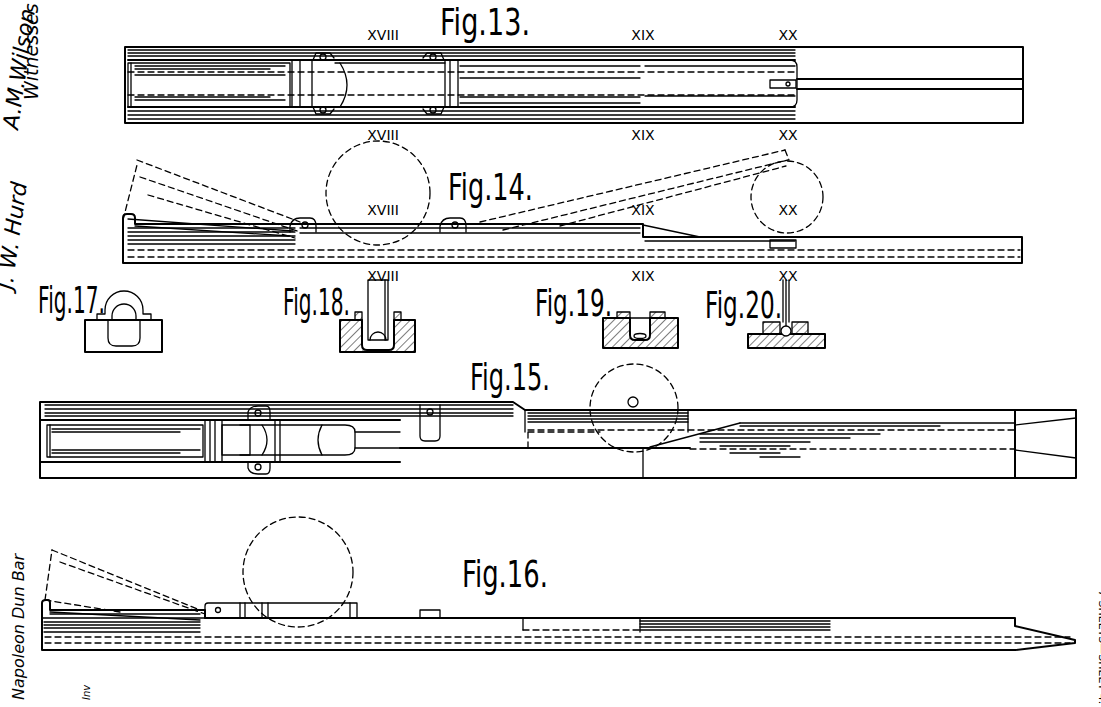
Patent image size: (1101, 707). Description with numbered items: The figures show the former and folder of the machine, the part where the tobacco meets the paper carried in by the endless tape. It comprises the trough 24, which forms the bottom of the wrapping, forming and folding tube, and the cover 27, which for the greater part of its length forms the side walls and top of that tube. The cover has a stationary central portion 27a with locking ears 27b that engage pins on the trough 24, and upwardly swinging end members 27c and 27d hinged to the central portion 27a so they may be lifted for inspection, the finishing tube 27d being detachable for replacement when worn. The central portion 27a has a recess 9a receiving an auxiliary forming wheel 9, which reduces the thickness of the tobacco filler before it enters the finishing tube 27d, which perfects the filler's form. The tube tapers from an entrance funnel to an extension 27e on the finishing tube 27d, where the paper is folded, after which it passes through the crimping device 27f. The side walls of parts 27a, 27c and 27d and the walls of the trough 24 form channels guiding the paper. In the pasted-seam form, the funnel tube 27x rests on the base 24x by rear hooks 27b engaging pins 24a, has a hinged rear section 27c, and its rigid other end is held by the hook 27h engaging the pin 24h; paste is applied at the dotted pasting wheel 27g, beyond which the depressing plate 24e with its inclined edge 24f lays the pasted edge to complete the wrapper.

In FIG. 18, the auxiliary forming wheel 9 is at (388, 297).
In FIG. 13, the recess 9a is at (360, 100).
In FIG. 15, the recess 9a is at (300, 440).
In FIG. 13, the trough 24 is at (248, 112).
In FIG. 14, the trough 24 is at (232, 248).
In FIG. 17, the trough 24 is at (162, 336).
In FIG. 18, the trough 24 is at (415, 336).
In FIG. 19, the trough 24 is at (658, 348).
In FIG. 20, the trough 24 is at (768, 348).
In FIG. 15, the trough 24 is at (558, 440).
In FIG. 16, the trough 24 is at (558, 625).
In FIG. 13, the pins 24a is at (325, 60).
In FIG. 15, the pins 24a is at (262, 412).
In FIG. 15, the depressing plate 24e is at (872, 442).
In FIG. 15, the inclined edge 24f is at (710, 432).
In FIG. 15, the pin 24h is at (440, 412).
In FIG. 16, the pin 24h is at (676, 625).
In FIG. 15, the base 24x is at (135, 470).
In FIG. 16, the base 24x is at (152, 620).
In FIG. 13, the cover 27 is at (232, 107).
In FIG. 13, the stationary central portion 27a is at (345, 95).
In FIG. 14, the stationary central portion 27a is at (352, 226).
In FIG. 18, the stationary central portion 27a is at (401, 314).
In FIG. 13, the locking ears 27b is at (316, 55).
In FIG. 14, the locking ears 27b is at (322, 230).
In FIG. 15, the locking ears 27b is at (258, 406).
In FIG. 16, the locking ears 27b is at (255, 608).
In FIG. 13, the upwardly swinging end member 27c is at (180, 80).
In FIG. 14, the upwardly swinging end member 27c is at (243, 226).
In FIG. 17, the upwardly swinging end member 27c is at (136, 310).
In FIG. 15, the upwardly swinging end member 27c is at (126, 439).
In FIG. 16, the upwardly swinging end member 27c is at (95, 612).
In FIG. 13, the finishing tube 27d is at (550, 80).
In FIG. 14, the finishing tube 27d is at (543, 228).
In FIG. 19, the finishing tube 27d is at (650, 312).
In FIG. 13, the extension 27e is at (706, 78).
In FIG. 14, the extension 27e is at (690, 238).
In FIG. 20, the extension 27e is at (808, 327).
In FIG. 13, the crimping device 27f is at (797, 84).
In FIG. 14, the crimping device 27f is at (800, 232).
In FIG. 20, the crimping device 27f is at (790, 336).
In FIG. 15, the pasting wheel 27g is at (590, 400).
In FIG. 15, the hook 27h is at (430, 409).
In FIG. 16, the hook 27h is at (435, 598).
In FIG. 15, the funnel tube 27x is at (242, 442).
In FIG. 16, the funnel tube 27x is at (280, 590).